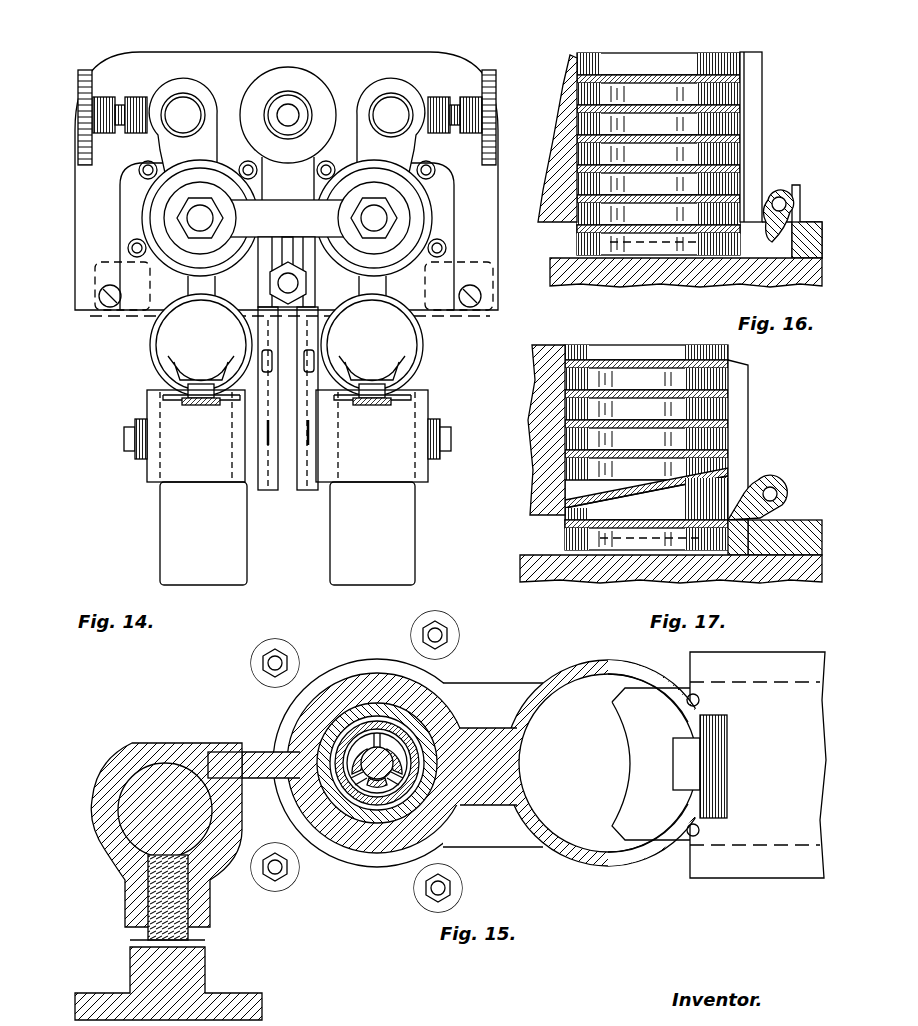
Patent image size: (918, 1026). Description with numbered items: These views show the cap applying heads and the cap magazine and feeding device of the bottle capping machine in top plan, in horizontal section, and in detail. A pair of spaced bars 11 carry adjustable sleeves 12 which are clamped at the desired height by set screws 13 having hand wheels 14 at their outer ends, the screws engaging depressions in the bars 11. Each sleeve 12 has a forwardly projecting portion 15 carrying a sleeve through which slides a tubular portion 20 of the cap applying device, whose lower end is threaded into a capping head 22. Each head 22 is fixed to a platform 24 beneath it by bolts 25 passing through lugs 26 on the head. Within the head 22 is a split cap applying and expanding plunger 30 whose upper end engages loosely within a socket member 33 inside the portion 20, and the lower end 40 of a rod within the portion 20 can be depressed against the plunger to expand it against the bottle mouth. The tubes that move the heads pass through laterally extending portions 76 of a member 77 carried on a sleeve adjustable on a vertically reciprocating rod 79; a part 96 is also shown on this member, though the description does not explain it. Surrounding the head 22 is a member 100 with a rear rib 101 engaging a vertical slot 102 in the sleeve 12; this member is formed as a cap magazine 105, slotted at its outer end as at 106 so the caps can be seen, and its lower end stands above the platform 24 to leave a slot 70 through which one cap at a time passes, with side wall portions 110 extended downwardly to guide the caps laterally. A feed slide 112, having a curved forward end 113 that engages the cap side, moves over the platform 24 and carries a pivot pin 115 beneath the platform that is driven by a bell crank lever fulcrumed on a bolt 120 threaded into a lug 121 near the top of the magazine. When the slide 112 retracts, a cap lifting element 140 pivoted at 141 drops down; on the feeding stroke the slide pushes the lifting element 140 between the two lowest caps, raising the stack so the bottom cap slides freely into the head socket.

In FIG. 14, the bars 11 is at (188, 110).
In FIG. 15, the bars 11 is at (122, 765).
In FIG. 15, the sleeves 12 is at (115, 860).
In FIG. 14, the set screws 13 is at (120, 100).
In FIG. 15, the set screws 13 is at (148, 940).
In FIG. 14, the hand wheels 14 is at (82, 90).
In FIG. 15, the hand wheels 14 is at (220, 995).
In FIG. 14, the forwardly projecting portions 15 is at (170, 172).
In FIG. 15, the portions of the cap applying devices 20 is at (372, 812).
In FIG. 15, the capping heads 22 is at (345, 700).
In FIG. 14, the platform 24 is at (175, 522).
In FIG. 16, the platform 24 is at (572, 268).
In FIG. 17, the platform 24 is at (520, 566).
In FIG. 15, the platform 24 is at (490, 682).
In FIG. 15, the bolts 25 is at (272, 658).
In FIG. 15, the lugs 26 is at (310, 648).
In FIG. 15, the cap applying and expanding plunger 30 is at (415, 795).
In FIG. 15, the socket member 33 is at (363, 780).
In FIG. 15, the lower end of rod 40 is at (420, 728).
In FIG. 16, the slot 70 is at (572, 238).
In FIG. 17, the slot 70 is at (556, 518).
In FIG. 14, the laterally extending portion 76 is at (196, 190).
In FIG. 14, the member 77 is at (287, 218).
In FIG. 14, the vertically reciprocating rod 79 is at (288, 112).
In FIG. 14, the link 96 is at (296, 250).
In FIG. 15, the member 100 is at (290, 745).
In FIG. 15, the rib 101 is at (240, 752).
In FIG. 15, the vertical slot 102 is at (168, 742).
In FIG. 16, the cap magazine 105 is at (748, 92).
In FIG. 17, the cap magazine 105 is at (545, 392).
In FIG. 15, the cap magazine 105 is at (610, 862).
In FIG. 15, the slot 106 is at (686, 734).
In FIG. 16, the side wall portions 110 is at (632, 288).
In FIG. 17, the side wall portions 110 is at (580, 584).
In FIG. 14, the feed slide 112 is at (190, 470).
In FIG. 16, the feed slide 112 is at (800, 224).
In FIG. 17, the feed slide 112 is at (790, 518).
In FIG. 15, the feed slide 112 is at (650, 786).
In FIG. 14, the curved forward end 113 is at (185, 360).
In FIG. 15, the curved forward end 113 is at (626, 742).
In FIG. 14, the pivot pin 115 is at (126, 440).
In FIG. 14, the bolt 120 is at (265, 352).
In FIG. 14, the lug 121 is at (305, 398).
In FIG. 14, the cap lifting element 140 is at (200, 384).
In FIG. 16, the cap lifting element 140 is at (790, 196).
In FIG. 17, the cap lifting element 140 is at (752, 486).
In FIG. 15, the cap lifting element 140 is at (712, 800).
In FIG. 14, the pivot 141 is at (190, 412).
In FIG. 16, the pivot 141 is at (781, 195).
In FIG. 17, the pivot 141 is at (773, 486).
In FIG. 15, the pivot 141 is at (720, 820).